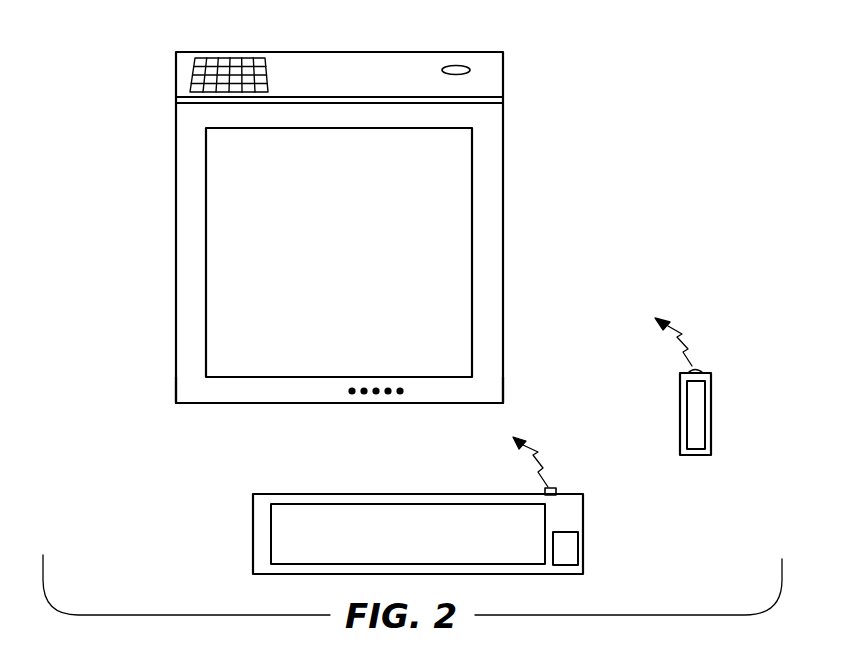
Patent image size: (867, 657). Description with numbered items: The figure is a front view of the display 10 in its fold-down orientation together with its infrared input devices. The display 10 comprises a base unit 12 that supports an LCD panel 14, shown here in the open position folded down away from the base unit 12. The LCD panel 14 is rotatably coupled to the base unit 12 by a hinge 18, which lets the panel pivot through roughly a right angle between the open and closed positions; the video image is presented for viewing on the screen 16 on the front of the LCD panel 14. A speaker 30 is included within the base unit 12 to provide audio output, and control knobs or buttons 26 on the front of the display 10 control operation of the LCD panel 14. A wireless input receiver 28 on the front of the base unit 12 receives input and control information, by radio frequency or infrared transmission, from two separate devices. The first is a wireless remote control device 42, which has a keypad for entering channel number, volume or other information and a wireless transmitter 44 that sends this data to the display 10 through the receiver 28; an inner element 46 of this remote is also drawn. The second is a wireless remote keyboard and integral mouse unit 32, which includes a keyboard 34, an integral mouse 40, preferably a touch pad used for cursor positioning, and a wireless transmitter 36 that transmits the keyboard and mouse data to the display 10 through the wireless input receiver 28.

The display 10 is at (664, 114).
The base unit 12 is at (503, 64).
The LCD panel 14 is at (503, 374).
The screen 16 is at (460, 273).
The hinge 18 is at (503, 101).
The control knobs or buttons 26 is at (408, 410).
The wireless input receiver 28 is at (445, 70).
The speaker 30 is at (222, 57).
The wireless remote keyboard and integral mouse unit 32 is at (586, 513).
The keyboard 34 is at (271, 533).
The wireless transmitter 36 is at (552, 488).
The integral mouse 40 is at (580, 553).
The wireless remote control device 42 is at (712, 400).
The wireless transmitter 44 is at (700, 371).
The stylus inner body 46 is at (700, 432).